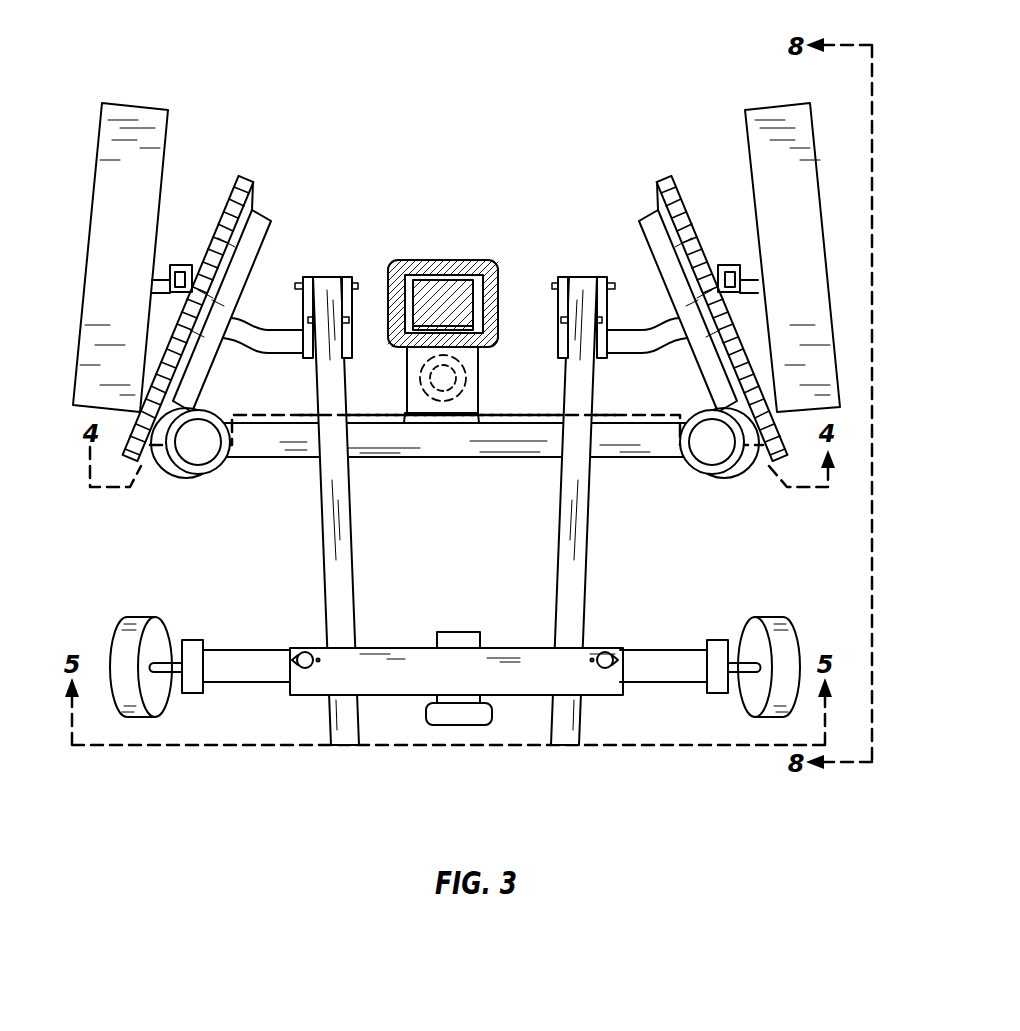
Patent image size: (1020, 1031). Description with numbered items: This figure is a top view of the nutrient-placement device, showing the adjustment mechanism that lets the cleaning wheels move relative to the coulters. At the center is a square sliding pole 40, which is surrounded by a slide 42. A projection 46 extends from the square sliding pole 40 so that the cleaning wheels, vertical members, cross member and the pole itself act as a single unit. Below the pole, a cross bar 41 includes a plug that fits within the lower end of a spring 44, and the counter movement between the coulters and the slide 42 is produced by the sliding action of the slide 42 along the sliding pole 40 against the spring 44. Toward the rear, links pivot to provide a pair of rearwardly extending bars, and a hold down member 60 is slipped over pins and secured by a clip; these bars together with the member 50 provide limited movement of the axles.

The square sliding pole 40 is at (432, 284).
The cross bar 41 is at (437, 453).
The slide 42 is at (462, 262).
The spring 44 is at (462, 378).
The projection 46 is at (481, 409).
The member 50 is at (466, 712).
The hold down member 60 is at (402, 660).